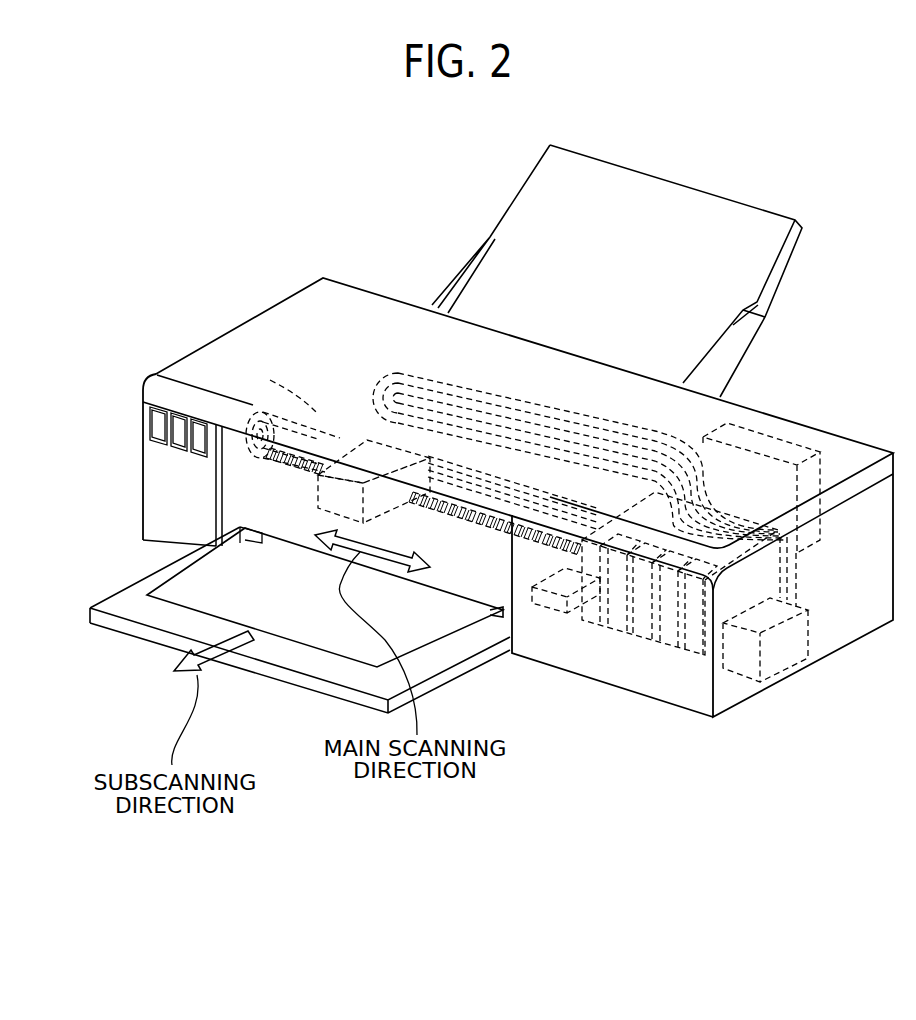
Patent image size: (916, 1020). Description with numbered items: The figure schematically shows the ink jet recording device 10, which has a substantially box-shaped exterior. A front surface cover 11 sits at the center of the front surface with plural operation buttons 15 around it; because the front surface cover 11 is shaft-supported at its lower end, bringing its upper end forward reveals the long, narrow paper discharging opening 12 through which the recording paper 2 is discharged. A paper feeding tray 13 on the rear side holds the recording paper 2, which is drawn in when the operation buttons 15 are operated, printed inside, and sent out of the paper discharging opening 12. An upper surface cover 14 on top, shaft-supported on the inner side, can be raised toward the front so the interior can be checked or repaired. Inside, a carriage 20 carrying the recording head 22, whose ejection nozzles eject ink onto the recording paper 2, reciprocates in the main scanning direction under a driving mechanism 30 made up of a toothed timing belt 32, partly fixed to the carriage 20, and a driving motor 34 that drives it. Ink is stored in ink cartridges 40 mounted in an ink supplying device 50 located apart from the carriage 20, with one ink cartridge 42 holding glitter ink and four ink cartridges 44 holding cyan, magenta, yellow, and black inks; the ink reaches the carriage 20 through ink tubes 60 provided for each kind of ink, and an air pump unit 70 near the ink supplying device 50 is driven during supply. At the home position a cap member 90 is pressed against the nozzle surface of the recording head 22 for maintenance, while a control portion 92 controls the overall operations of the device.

The ink jet recording device 10 is at (496, 427).
The front surface cover 11 is at (113, 628).
The paper discharging opening 12 is at (182, 537).
The paper feeding tray 13 is at (453, 298).
The upper surface cover 14 is at (190, 358).
The operation buttons 15 is at (115, 418).
The recording paper 2 is at (173, 588).
The carriage 20 is at (313, 473).
The recording head 22 is at (320, 522).
The driving mechanism 30 is at (306, 375).
The timing belt 32 is at (343, 430).
The driving motor 34 is at (247, 407).
The ink cartridges 40 is at (680, 647).
The ink cartridge 42 is at (688, 655).
The ink cartridges 44 is at (637, 660).
The ink supplying device 50 is at (717, 673).
The ink tubes 60 is at (673, 440).
The air pump unit 70 is at (797, 663).
The cap member 90 is at (548, 605).
The control portion 92 is at (793, 440).